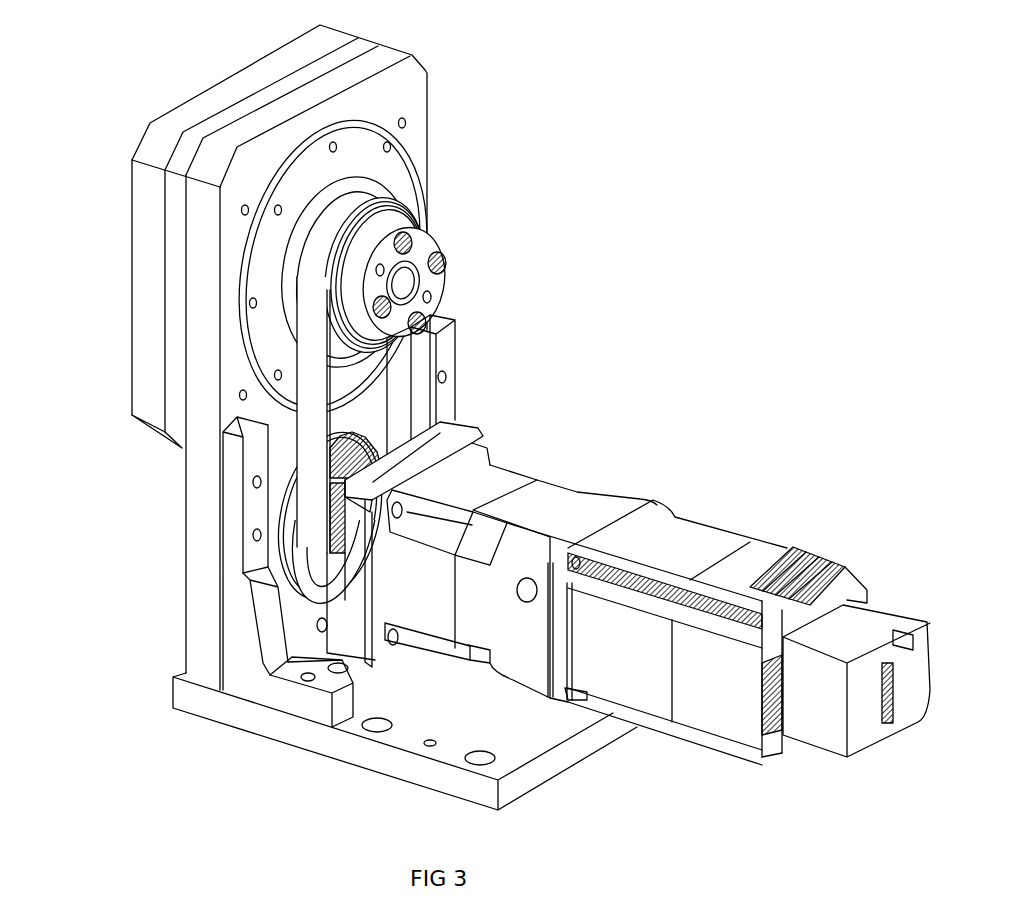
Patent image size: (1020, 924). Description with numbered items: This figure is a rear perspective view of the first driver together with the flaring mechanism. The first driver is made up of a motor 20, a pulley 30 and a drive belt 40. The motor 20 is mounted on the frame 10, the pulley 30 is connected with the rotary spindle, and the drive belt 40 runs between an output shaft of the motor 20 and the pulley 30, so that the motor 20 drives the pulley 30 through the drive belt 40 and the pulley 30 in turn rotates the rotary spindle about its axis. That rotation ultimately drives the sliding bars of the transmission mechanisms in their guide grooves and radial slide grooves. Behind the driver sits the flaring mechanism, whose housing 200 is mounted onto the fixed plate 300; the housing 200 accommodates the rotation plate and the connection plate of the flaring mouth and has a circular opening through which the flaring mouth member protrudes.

The frame 10 is at (200, 548).
The motor 20 is at (698, 546).
The pulley 30 is at (430, 242).
The drive belt 40 is at (396, 410).
The housing 200 is at (140, 397).
The fixed plate 300 is at (176, 243).